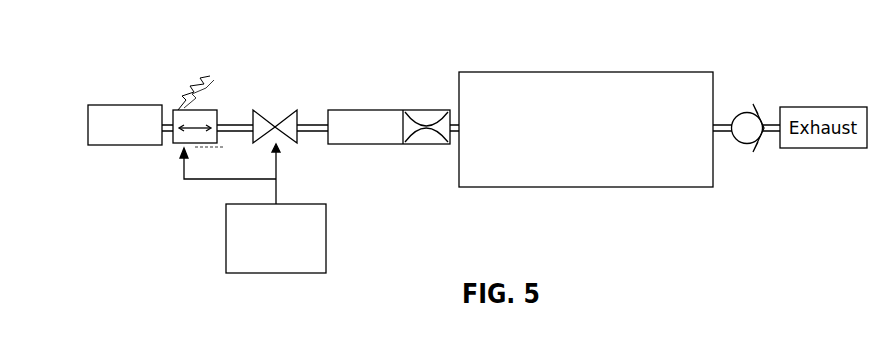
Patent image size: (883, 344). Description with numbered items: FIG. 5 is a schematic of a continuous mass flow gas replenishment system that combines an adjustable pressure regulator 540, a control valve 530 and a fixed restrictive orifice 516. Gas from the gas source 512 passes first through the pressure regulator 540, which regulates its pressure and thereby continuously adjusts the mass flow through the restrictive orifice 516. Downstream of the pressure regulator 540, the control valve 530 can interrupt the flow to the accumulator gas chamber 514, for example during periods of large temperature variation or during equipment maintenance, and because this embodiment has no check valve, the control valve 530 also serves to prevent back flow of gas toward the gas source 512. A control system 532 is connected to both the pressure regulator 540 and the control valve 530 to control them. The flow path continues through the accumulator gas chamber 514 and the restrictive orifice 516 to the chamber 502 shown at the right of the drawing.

The process chamber 502 is at (553, 71).
The gas source 512 is at (120, 105).
The accumulator gas chamber 514 is at (368, 109).
The restrictive orifice 516 is at (430, 109).
The control valve 530 is at (267, 109).
The control system 532 is at (326, 245).
The pressure regulator 540 is at (174, 110).